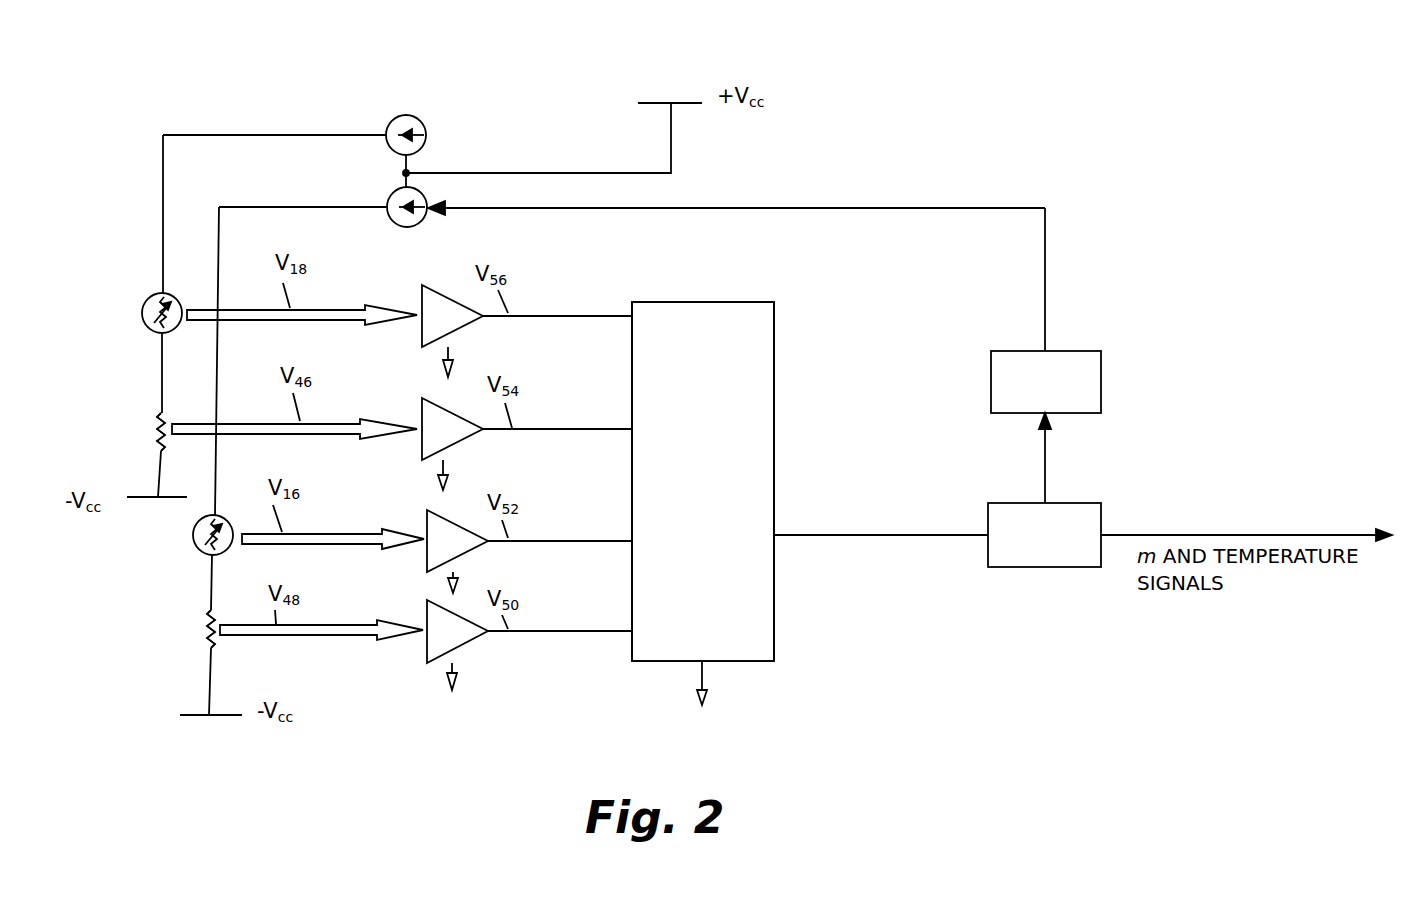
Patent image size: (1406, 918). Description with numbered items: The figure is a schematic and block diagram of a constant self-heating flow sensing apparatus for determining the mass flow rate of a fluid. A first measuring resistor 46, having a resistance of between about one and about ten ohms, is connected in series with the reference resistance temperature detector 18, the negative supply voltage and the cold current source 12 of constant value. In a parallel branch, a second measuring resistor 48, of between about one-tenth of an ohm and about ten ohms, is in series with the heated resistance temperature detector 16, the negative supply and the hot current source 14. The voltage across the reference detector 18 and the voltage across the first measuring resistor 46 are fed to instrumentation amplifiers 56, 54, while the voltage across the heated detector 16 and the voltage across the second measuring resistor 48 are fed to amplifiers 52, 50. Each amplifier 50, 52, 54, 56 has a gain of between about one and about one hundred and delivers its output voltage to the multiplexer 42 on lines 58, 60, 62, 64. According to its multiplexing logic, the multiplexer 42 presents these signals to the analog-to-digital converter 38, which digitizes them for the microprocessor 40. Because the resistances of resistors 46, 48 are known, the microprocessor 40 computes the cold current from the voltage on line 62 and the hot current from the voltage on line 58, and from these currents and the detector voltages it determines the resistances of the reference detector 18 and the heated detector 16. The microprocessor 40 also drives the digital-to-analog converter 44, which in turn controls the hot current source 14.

The cold current source 12 is at (420, 114).
The hot current source 14 is at (425, 219).
The heated resistance temperature detector 16 is at (190, 541).
The reference resistance temperature detector 18 is at (145, 328).
The analog-to-digital converter 38 is at (715, 447).
The microprocessor 40 is at (1057, 537).
The multiplexer 42 is at (715, 507).
The digital-to-analog converter 44 is at (1058, 385).
The first measuring resistor 46 is at (155, 433).
The second measuring resistor 48 is at (203, 633).
The amplifier 50 is at (457, 641).
The amplifier 52 is at (457, 551).
The instrumentation amplifier 54 is at (452, 439).
The instrumentation amplifier 56 is at (452, 326).
The line 58 is at (533, 630).
The line 60 is at (528, 540).
The line 62 is at (556, 428).
The line 64 is at (526, 314).